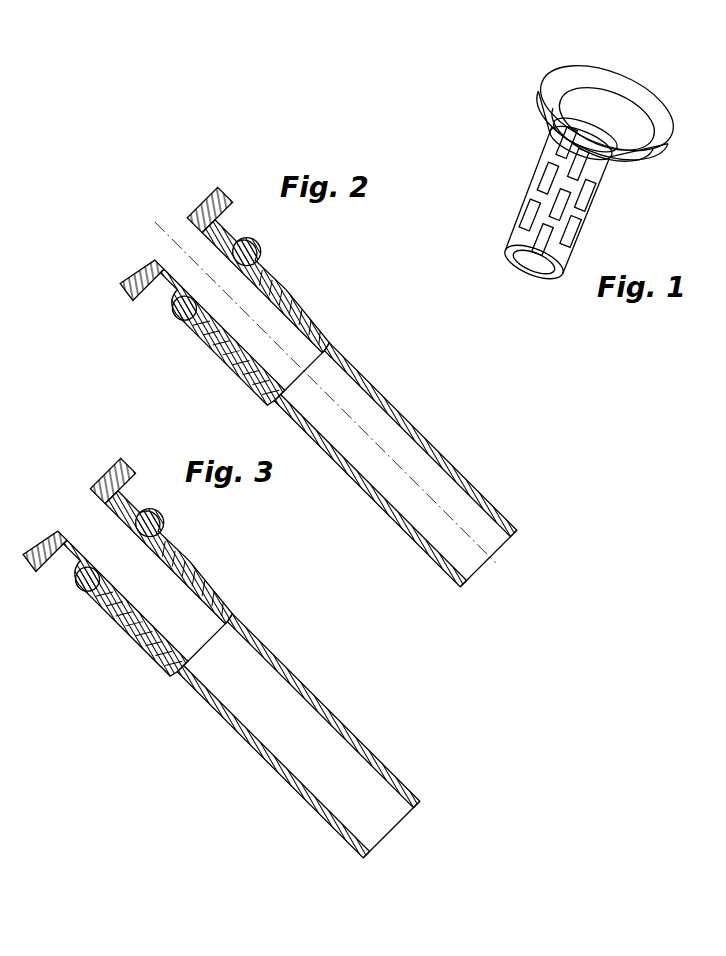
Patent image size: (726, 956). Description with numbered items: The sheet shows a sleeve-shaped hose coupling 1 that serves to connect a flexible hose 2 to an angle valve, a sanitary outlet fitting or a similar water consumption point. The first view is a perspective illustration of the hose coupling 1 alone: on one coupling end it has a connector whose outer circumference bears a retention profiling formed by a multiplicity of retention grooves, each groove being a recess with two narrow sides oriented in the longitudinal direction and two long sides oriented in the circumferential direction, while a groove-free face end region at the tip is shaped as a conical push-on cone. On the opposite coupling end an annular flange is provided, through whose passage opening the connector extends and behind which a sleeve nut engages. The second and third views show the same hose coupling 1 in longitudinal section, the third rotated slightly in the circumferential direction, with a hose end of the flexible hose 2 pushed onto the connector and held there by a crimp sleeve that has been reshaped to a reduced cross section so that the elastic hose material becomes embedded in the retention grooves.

In FIG. 1, the hose coupling 1 is at (593, 169).
In FIG. 2, the hose coupling 1 is at (218, 284).
In FIG. 3, the hose coupling 1 is at (145, 552).
In FIG. 2, the flexible hose 2 is at (360, 373).
In FIG. 3, the flexible hose 2 is at (302, 664).